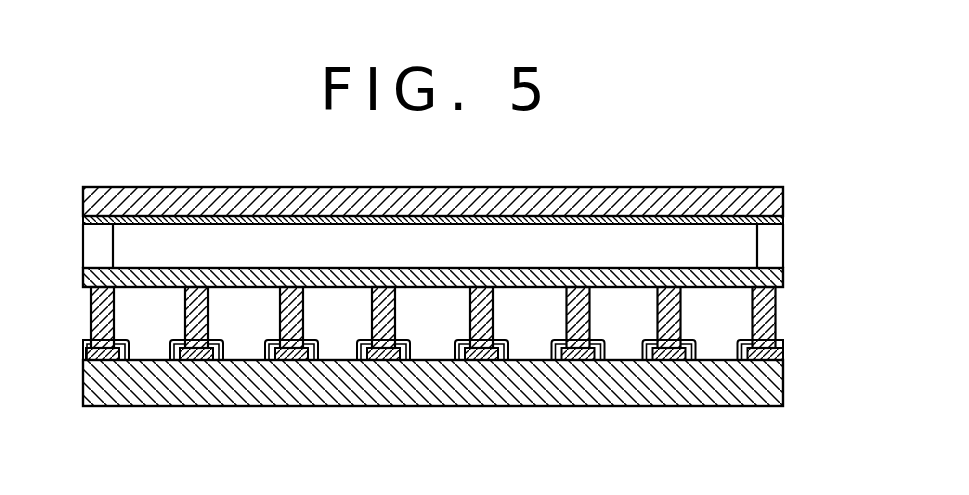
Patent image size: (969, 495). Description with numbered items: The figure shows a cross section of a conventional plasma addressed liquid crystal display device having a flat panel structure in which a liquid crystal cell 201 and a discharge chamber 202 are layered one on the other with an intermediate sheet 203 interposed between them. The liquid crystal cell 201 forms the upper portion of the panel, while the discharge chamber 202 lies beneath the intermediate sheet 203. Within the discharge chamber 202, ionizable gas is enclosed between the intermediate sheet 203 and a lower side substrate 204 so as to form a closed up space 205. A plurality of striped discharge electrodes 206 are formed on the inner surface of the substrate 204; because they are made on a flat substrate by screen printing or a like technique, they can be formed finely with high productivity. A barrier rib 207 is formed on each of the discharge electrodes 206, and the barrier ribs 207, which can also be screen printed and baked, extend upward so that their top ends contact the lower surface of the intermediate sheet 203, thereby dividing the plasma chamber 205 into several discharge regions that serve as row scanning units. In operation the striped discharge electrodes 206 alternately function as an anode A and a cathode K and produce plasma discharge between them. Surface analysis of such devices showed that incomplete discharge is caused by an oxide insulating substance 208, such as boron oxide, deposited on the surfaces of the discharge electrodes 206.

The liquid crystal cell 201 is at (807, 183).
The discharge chamber 202 is at (807, 287).
The intermediate sheet 203 is at (784, 274).
The lower side substrate 204 is at (770, 386).
The closed up space 205 is at (715, 330).
The striped discharge electrodes 206 is at (483, 350).
The barrier rib 207 is at (572, 303).
The oxide insulating substance 208 is at (606, 350).
The anode A is at (193, 360).
The cathode K is at (288, 360).